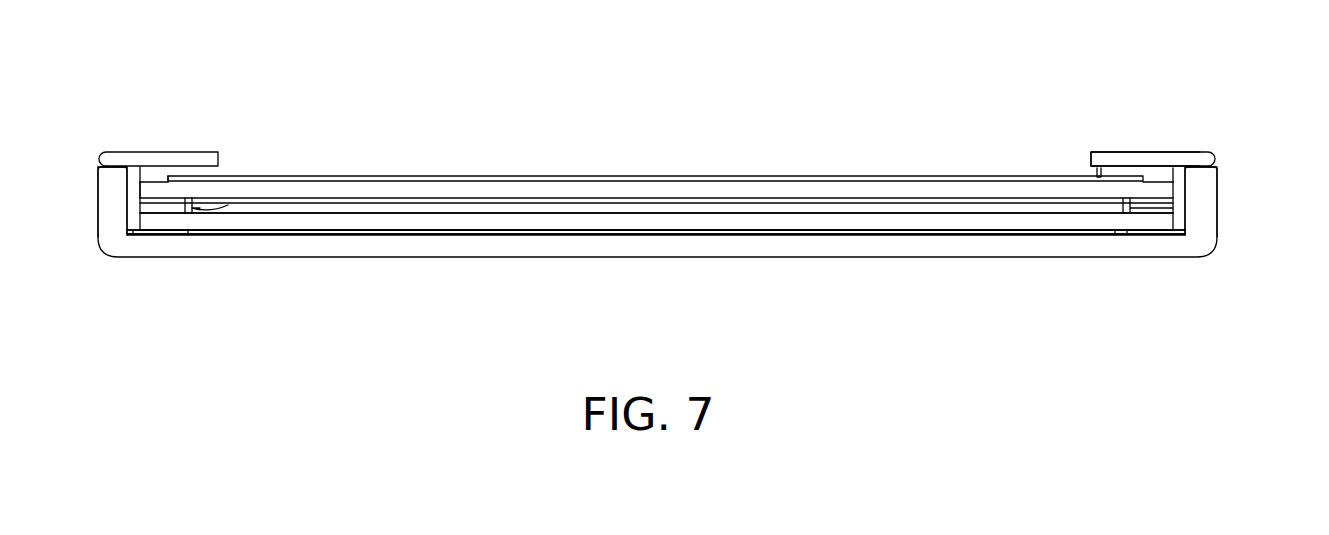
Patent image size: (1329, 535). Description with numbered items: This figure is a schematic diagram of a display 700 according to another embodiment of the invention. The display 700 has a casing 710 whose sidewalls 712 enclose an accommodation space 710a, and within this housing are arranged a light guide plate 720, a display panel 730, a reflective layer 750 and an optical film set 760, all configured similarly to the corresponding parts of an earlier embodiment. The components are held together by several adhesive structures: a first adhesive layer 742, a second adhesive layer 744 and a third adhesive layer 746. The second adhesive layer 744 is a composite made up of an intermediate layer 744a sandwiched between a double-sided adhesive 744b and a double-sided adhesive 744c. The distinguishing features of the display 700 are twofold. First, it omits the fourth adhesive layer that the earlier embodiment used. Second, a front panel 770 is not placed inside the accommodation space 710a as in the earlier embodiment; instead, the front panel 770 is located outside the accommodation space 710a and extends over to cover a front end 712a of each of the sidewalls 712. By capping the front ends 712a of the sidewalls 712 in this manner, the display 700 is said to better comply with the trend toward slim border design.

The display 700 is at (1222, 336).
The casing 710 is at (818, 250).
The accommodation space 710a is at (1178, 168).
The sidewalls 712 is at (100, 183).
The front end 712a is at (114, 156).
The light guide plate 720 is at (598, 226).
The display panel 730 is at (731, 184).
The first adhesive layer 742 is at (160, 236).
The second adhesive layer 744 is at (115, 78).
The intermediate layer 744a is at (180, 206).
The double-sided adhesive 744b is at (150, 197).
The double-sided adhesive 744c is at (197, 212).
The third adhesive layer 746 is at (1098, 173).
The reflective layer 750 is at (493, 232).
The optical film set 760 is at (413, 214).
The front panel 770 is at (1127, 162).